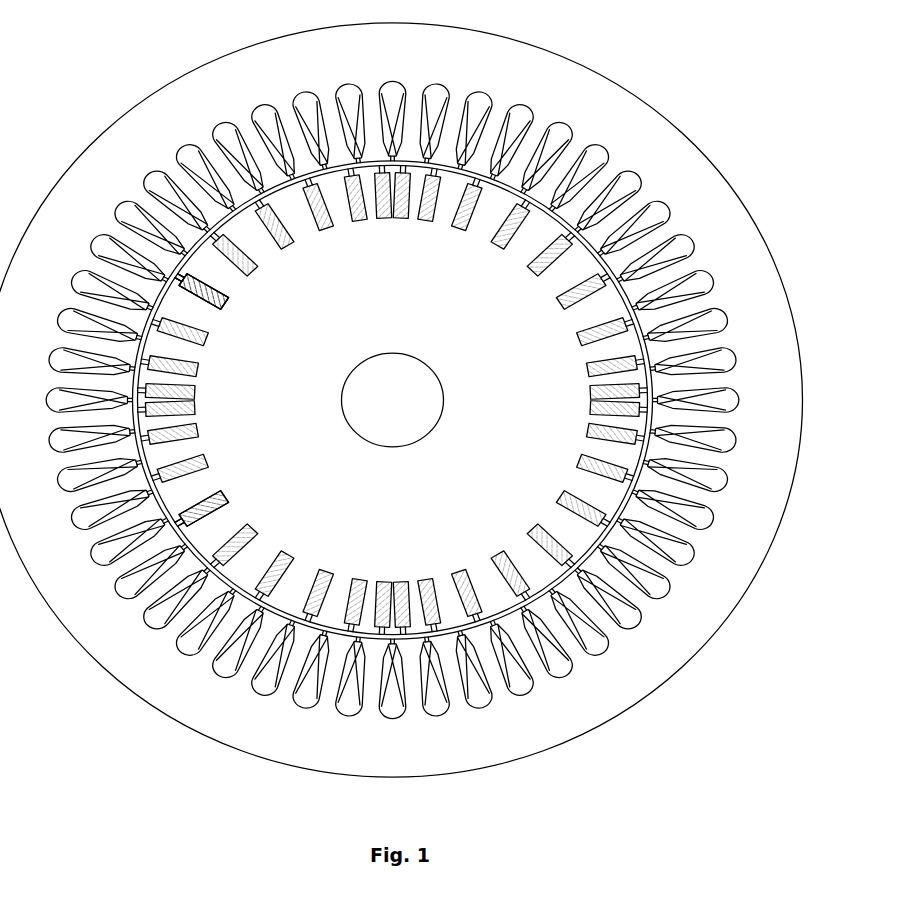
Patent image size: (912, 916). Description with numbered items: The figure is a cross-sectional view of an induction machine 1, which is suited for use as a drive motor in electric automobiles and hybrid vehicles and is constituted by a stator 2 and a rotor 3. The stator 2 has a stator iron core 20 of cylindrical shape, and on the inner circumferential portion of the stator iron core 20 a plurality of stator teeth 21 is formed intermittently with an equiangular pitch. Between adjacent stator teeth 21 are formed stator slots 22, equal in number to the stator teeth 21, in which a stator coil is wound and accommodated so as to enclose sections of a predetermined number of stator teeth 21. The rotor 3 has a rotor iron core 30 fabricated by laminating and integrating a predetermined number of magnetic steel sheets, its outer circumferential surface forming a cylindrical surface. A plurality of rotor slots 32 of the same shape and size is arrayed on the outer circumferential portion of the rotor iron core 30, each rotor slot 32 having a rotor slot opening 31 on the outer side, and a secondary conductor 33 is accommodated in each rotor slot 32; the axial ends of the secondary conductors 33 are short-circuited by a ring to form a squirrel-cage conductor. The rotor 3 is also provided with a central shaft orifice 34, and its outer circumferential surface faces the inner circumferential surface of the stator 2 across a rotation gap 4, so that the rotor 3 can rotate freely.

The induction machine 1 is at (401, 394).
The stator 2 is at (392, 399).
The stator iron core 20 is at (700, 147).
The stator teeth 21 is at (647, 248).
The stator slots 22 is at (641, 234).
The rotor 3 is at (339, 351).
The rotor iron core 30 is at (201, 235).
The rotor slot opening 31 is at (181, 276).
The rotor slots 32 is at (221, 296).
The secondary conductor 33 is at (217, 305).
The shaft orifice 34 is at (423, 357).
The rotation gap 4 is at (199, 545).